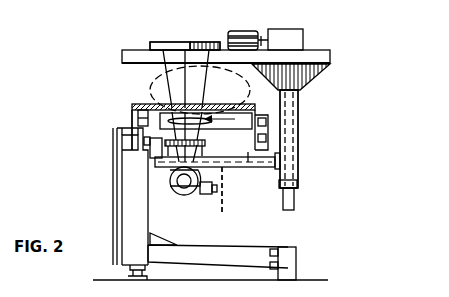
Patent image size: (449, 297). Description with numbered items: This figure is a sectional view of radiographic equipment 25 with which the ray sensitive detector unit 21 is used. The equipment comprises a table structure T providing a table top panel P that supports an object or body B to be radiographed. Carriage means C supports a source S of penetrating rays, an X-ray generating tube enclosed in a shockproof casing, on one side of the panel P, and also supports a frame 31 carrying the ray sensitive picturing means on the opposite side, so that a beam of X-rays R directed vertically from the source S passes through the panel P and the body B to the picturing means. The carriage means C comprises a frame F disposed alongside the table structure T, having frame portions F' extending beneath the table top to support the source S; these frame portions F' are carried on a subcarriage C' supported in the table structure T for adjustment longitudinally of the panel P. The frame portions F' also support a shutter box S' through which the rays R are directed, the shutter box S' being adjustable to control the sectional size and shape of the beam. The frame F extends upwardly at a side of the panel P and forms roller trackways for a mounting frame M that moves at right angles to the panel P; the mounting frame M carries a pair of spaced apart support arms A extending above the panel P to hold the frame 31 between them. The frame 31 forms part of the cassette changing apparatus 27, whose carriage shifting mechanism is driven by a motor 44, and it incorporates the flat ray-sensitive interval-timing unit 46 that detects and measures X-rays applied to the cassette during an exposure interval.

The cassette changing apparatus 27 is at (116, 56).
The frame 31 is at (140, 55).
The ray-sensitive interval-timing unit 46 is at (157, 37).
The ray sensitive detector unit 21 is at (200, 38).
The motor 44 is at (246, 38).
The support arms A is at (314, 57).
The frame F is at (293, 126).
The carriage means C is at (315, 139).
The mounting frame M is at (295, 197).
The object B is at (200, 90).
The radiographic equipment 25 is at (112, 104).
The table top panel P is at (130, 100).
The X-rays R is at (206, 122).
The shutter box S' is at (217, 151).
The subcarriage C' is at (254, 170).
The frame portions F' is at (229, 191).
The table structure T is at (235, 180).
The source S is at (193, 195).